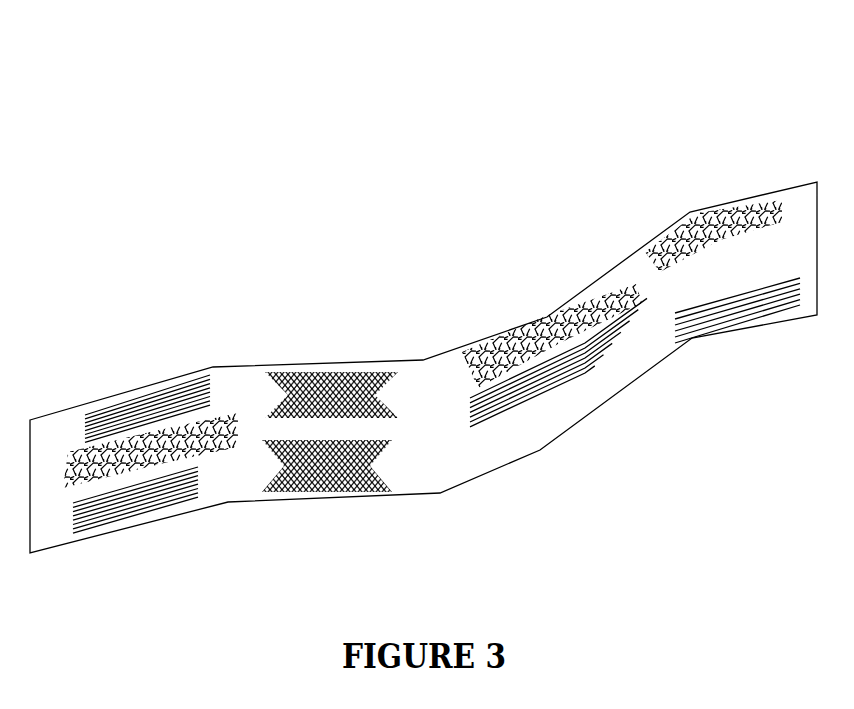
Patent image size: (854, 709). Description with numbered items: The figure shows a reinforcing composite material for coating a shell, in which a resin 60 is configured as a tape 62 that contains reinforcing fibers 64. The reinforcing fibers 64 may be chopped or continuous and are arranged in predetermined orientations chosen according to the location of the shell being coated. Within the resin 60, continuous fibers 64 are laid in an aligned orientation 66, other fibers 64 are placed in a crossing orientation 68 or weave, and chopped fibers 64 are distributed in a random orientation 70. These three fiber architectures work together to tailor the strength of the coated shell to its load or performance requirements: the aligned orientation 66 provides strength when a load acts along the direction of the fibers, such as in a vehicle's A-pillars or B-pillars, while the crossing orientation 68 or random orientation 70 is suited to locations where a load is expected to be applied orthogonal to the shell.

The resin 60 is at (424, 366).
The tape 62 is at (537, 112).
The reinforcing fibers 64 is at (191, 384).
The aligned orientation 66 is at (143, 514).
The crossing orientation 68 is at (319, 356).
The random orientation 70 is at (688, 208).